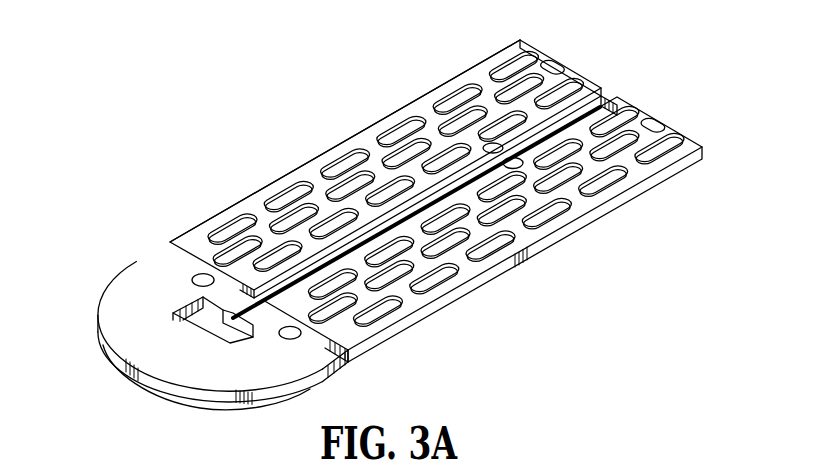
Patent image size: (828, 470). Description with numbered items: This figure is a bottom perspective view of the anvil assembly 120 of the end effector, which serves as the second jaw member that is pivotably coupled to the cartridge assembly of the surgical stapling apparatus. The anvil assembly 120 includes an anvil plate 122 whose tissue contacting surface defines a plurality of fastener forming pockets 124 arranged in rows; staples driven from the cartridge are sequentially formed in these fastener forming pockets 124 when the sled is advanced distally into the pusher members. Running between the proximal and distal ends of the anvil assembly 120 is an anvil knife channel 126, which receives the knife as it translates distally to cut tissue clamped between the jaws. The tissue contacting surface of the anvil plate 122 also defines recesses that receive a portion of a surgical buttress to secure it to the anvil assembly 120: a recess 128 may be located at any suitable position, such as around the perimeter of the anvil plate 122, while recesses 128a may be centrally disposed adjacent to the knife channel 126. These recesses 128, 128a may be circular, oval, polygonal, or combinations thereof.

The anvil assembly 120 is at (88, 382).
The anvil plate 122 is at (221, 295).
The fastener forming pockets 124 is at (580, 73).
The anvil knife channel 126 is at (614, 90).
The recess 128 is at (302, 334).
The recesses 128a is at (520, 166).